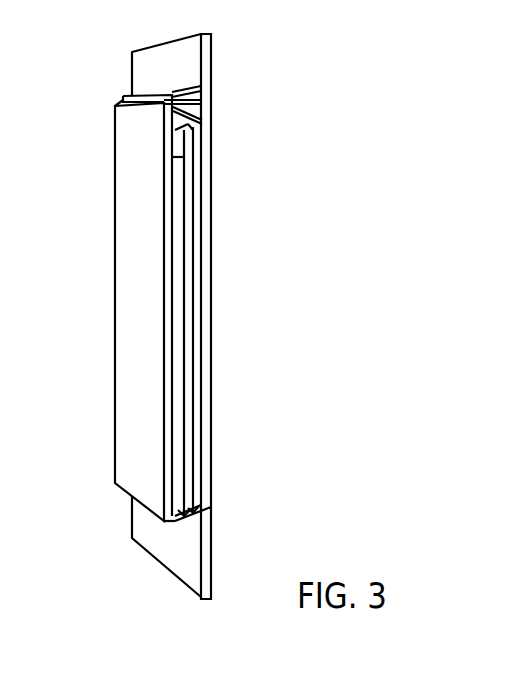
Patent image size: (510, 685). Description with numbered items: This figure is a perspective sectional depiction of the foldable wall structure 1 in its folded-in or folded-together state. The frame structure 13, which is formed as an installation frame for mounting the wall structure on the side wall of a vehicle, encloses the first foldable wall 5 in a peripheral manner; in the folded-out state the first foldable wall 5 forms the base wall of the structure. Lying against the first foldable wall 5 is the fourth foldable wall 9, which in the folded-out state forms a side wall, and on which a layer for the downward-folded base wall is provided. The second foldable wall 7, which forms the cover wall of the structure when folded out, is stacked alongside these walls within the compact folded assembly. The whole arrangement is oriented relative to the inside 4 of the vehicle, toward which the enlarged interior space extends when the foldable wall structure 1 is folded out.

The foldable wall structure 1 is at (304, 492).
The inside of the vehicle 4 is at (179, 317).
The first foldable wall 5 is at (212, 147).
The second foldable wall 7 is at (130, 385).
The fourth foldable wall 9 is at (192, 207).
The frame structure 13 is at (211, 55).